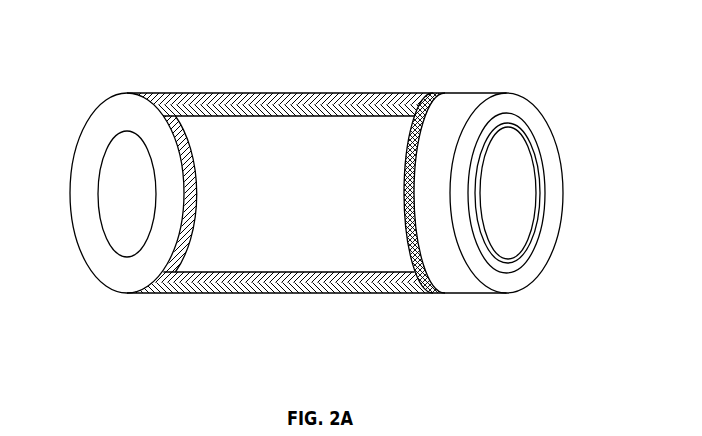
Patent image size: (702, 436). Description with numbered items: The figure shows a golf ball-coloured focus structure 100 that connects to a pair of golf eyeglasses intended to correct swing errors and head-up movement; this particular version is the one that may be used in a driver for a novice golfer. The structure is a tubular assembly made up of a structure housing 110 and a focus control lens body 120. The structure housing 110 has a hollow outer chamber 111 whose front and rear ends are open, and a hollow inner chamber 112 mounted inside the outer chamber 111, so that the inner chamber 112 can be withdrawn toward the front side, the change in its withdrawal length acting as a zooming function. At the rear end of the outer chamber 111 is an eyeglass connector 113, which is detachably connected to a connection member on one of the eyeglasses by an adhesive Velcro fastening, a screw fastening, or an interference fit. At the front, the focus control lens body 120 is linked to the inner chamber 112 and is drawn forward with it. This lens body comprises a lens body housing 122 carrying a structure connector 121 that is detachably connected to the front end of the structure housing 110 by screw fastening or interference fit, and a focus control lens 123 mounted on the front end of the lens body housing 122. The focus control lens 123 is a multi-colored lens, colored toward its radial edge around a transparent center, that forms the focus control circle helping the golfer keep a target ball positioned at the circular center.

The golf ball-coloured focus structure 100 is at (84, 96).
The structure housing 110 is at (238, 369).
The outer chamber 111 is at (230, 293).
The inner chamber 112 is at (265, 289).
The eyeglass connector 113 is at (88, 231).
The focus control lens body 120 is at (473, 91).
The structure connector 121 is at (430, 295).
The lens body housing 122 is at (431, 200).
The focus control lens 123 is at (509, 223).